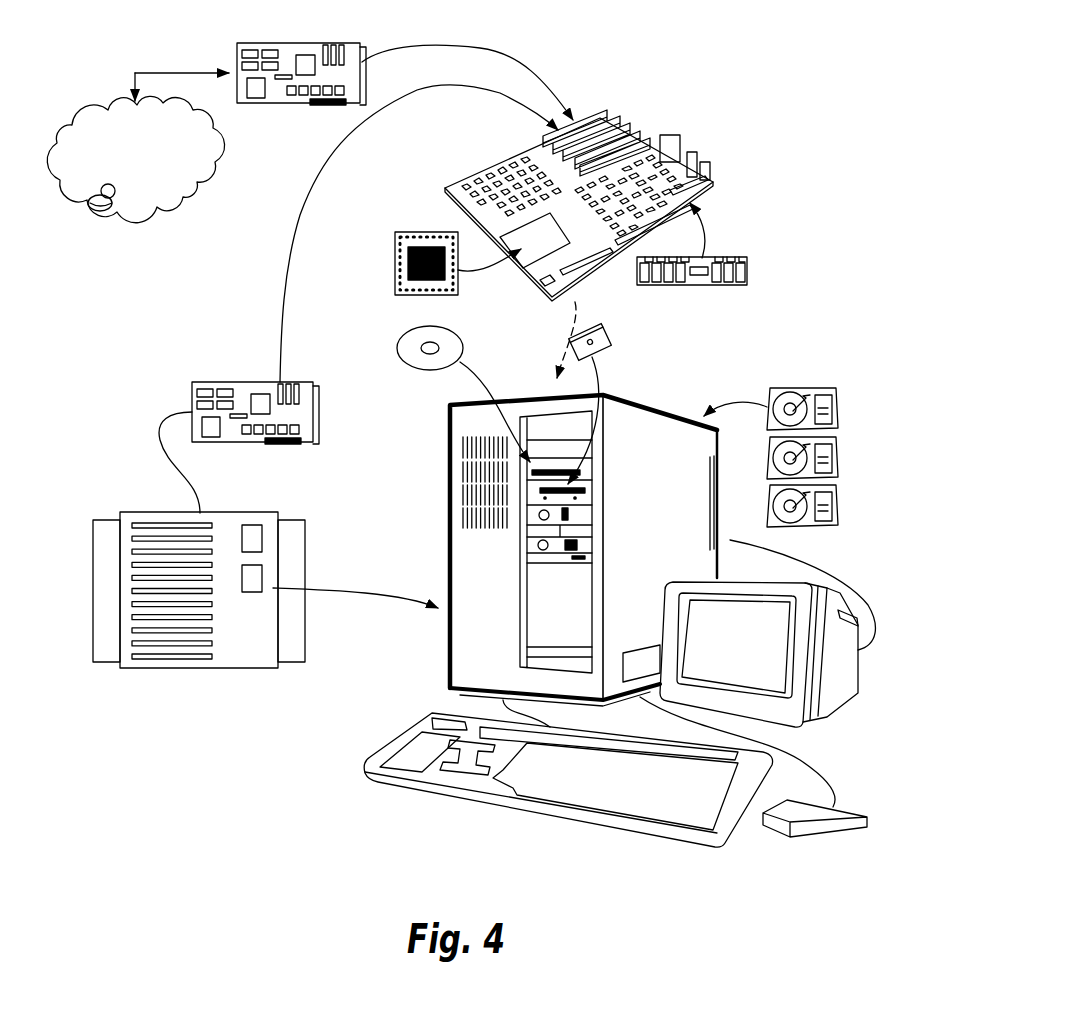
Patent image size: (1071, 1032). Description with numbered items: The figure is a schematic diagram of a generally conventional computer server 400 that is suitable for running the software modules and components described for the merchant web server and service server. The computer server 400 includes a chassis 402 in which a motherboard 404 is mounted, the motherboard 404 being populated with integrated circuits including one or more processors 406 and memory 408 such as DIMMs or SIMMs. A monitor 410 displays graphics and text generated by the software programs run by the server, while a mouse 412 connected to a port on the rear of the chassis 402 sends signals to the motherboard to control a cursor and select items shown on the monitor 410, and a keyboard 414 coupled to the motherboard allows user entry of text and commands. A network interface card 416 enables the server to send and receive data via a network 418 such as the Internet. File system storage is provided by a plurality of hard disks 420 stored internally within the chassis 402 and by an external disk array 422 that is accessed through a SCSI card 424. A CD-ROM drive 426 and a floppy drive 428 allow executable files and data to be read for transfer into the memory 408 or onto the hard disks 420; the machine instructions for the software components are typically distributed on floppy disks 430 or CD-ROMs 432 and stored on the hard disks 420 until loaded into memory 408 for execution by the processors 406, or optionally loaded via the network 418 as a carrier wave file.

The computer server 400 is at (252, 821).
The chassis 402 is at (460, 655).
The motherboard 404 is at (497, 155).
The processors 406 is at (395, 268).
The memory 408 is at (750, 270).
The monitor 410 is at (842, 688).
The mouse 412 is at (847, 832).
The keyboard 414 is at (593, 800).
The network interface card 416 is at (240, 53).
The network 418 is at (172, 192).
The hard disks 420 is at (795, 393).
The disk array 422 is at (298, 553).
The SCSI card 424 is at (310, 428).
The CD-ROM drive 426 is at (562, 465).
The floppy drive 428 is at (588, 490).
The floppy disks 430 is at (610, 338).
The CD-ROMs 432 is at (458, 340).